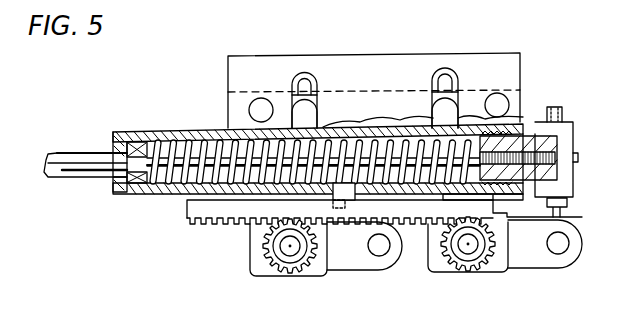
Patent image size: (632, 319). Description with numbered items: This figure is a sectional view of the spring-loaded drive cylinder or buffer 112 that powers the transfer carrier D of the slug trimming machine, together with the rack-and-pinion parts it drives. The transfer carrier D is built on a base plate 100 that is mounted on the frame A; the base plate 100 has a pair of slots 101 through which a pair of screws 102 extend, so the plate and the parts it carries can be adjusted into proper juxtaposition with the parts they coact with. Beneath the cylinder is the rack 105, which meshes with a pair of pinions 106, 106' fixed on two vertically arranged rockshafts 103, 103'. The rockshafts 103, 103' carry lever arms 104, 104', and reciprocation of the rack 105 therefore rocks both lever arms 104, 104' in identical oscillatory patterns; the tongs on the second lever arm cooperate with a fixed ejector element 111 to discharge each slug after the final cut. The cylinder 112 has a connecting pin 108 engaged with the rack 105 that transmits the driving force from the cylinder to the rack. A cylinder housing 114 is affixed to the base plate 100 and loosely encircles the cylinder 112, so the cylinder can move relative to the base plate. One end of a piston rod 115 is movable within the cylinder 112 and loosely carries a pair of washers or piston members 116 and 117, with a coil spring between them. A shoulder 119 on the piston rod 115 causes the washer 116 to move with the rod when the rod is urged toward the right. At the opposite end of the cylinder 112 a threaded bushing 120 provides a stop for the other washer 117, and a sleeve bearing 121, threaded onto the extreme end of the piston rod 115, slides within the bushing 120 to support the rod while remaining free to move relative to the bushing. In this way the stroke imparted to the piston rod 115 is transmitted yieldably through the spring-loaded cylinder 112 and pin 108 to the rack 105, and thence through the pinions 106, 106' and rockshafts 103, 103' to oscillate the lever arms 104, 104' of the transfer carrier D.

The base plate 100 is at (522, 58).
The slots 101 is at (430, 70).
The screws 102 is at (440, 112).
The rockshaft 103 is at (267, 255).
The rockshaft 103' is at (472, 259).
The lever arm 104 is at (364, 264).
The lever arm 104' is at (545, 260).
The rack 105 is at (190, 222).
The pinion 106 is at (288, 267).
The pinion 106' is at (457, 261).
The connecting pin 108 is at (355, 202).
The fixed ejector element 111 is at (562, 210).
The spring-loaded drive cylinder 112 is at (133, 192).
The cylinder housing 114 is at (523, 194).
The piston rod 115 is at (58, 152).
The washer 116 is at (138, 140).
The washer 117 is at (483, 133).
The shoulder 119 is at (110, 170).
The threaded bushing 120 is at (530, 133).
The sleeve bearing 121 is at (550, 140).
The frame A is at (183, 132).
The transfer carrier D is at (229, 234).